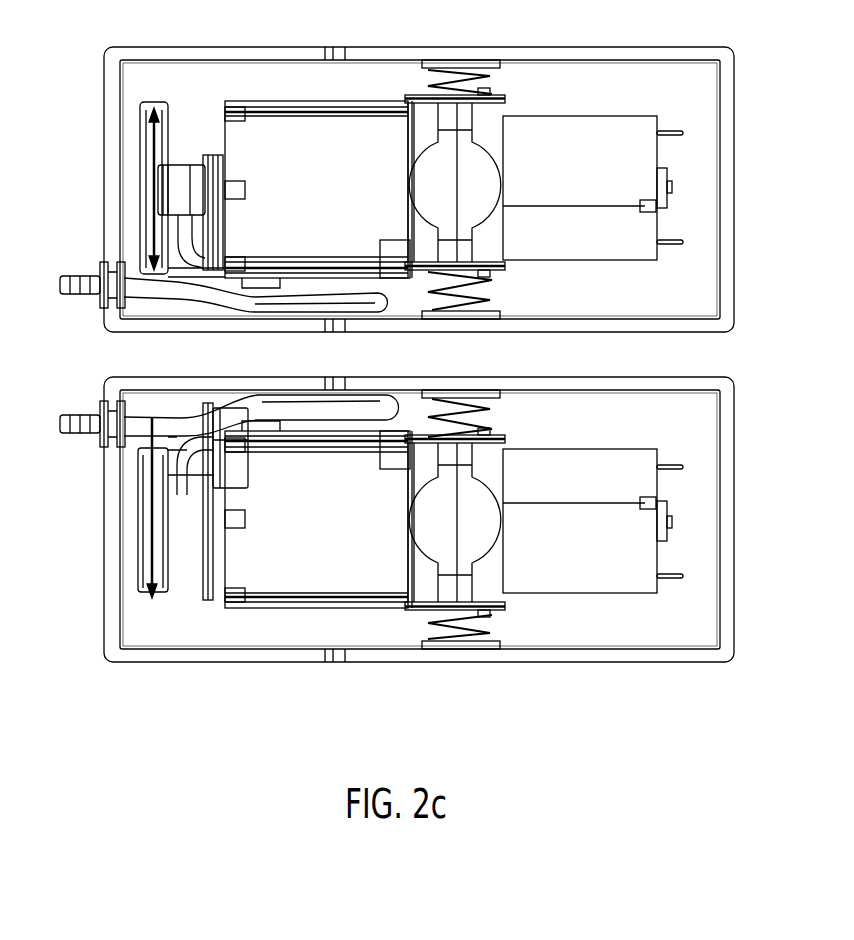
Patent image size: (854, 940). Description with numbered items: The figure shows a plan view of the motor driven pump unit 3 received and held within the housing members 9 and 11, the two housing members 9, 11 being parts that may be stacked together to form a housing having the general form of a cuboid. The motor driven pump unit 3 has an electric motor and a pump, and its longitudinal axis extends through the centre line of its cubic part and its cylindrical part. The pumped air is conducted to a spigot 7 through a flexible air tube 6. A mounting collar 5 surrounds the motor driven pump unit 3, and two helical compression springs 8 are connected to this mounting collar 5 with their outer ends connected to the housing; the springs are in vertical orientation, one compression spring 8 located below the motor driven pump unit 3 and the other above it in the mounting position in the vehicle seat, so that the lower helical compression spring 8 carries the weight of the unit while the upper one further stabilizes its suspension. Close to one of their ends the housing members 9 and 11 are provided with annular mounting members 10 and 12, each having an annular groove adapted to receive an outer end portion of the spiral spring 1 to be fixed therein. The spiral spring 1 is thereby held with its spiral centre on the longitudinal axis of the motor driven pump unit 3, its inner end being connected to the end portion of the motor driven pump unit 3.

The spiral spring 1 is at (153, 598).
The motor driven pump unit 3 is at (363, 150).
The mounting collar 5 is at (480, 163).
The flexible air tube 6 is at (168, 416).
The spigot 7 is at (80, 272).
The helical compression spring 8 is at (470, 85).
The housing member 9 is at (596, 662).
The annular mounting member 10 is at (140, 592).
The housing member 11 is at (236, 47).
The annular mounting member 12 is at (150, 100).